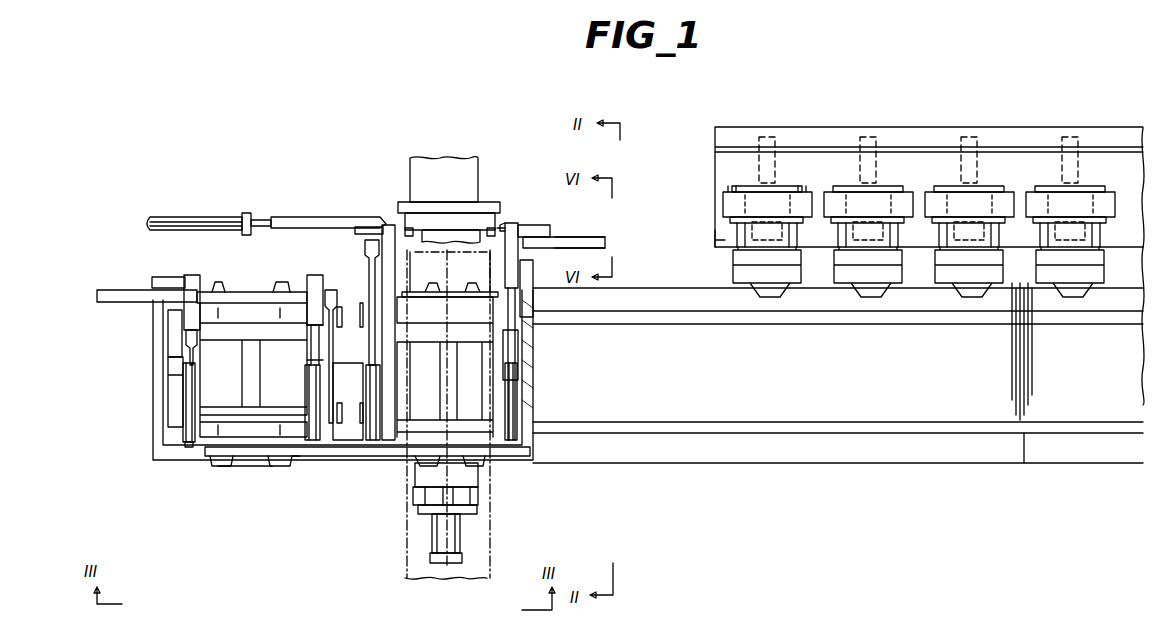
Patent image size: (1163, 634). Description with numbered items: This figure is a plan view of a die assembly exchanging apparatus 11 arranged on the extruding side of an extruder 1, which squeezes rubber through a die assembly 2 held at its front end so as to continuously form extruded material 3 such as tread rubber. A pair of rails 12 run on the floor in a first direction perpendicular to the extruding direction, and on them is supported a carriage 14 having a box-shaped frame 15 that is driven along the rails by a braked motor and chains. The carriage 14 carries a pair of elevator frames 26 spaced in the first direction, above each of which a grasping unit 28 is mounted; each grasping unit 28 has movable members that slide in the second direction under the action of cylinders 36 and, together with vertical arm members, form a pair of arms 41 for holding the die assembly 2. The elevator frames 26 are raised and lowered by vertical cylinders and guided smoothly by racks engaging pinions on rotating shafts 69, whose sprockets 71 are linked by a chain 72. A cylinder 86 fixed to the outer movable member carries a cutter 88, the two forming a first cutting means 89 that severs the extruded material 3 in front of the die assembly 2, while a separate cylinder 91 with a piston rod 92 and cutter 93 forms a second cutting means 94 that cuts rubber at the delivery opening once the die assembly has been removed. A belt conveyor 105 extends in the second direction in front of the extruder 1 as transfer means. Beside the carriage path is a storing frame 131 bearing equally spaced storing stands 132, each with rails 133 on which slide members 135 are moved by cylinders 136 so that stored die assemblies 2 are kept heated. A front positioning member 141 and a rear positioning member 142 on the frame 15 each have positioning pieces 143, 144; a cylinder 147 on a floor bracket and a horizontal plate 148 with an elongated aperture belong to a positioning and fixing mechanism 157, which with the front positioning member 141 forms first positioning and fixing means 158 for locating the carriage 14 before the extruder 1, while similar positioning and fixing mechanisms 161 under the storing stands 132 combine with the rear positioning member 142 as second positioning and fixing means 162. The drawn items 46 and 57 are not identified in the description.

The extruder 1 is at (450, 157).
The die assembly 2 is at (450, 205).
The extruded material 3 is at (458, 241).
The die assembly exchanging apparatus 11 is at (347, 493).
The rails 12 is at (738, 323).
The carriage 14 is at (345, 458).
The frame 15 is at (292, 454).
The elevator frame 26 is at (170, 380).
The grasping unit 28 is at (210, 281).
The cylinder 36 is at (183, 440).
The arms 41 is at (193, 348).
The stop plate 46 is at (168, 277).
The guide member 57 is at (170, 328).
The rotating shafts 69 is at (222, 407).
The sprockets 71 is at (360, 403).
The chain 72 is at (360, 348).
The cylinder 86 is at (108, 290).
The cutter 88 is at (512, 228).
The first cutting means 89 is at (568, 232).
The cylinder 91 is at (190, 217).
The piston rod 92 is at (257, 213).
The cutter 93 is at (338, 217).
The second cutting means 94 is at (282, 206).
The belt conveyor 105 is at (488, 548).
The storing frame 131 is at (846, 132).
The storing stands 132 is at (790, 190).
The rails 133 is at (790, 228).
The slide members 135 is at (735, 190).
The cylinders 136 is at (775, 135).
The front positioning member 141 is at (231, 468).
The rear positioning member 142 is at (276, 281).
The positioning piece 143 is at (213, 460).
The positioning piece 144 is at (267, 462).
The cylinder 147 is at (432, 538).
The horizontal plate 148 is at (470, 480).
The positioning and fixing mechanism 157 is at (490, 505).
The first positioning and fixing means 158 is at (388, 505).
The positioning and fixing mechanisms 161 is at (728, 257).
The second positioning and fixing means 162 is at (707, 238).